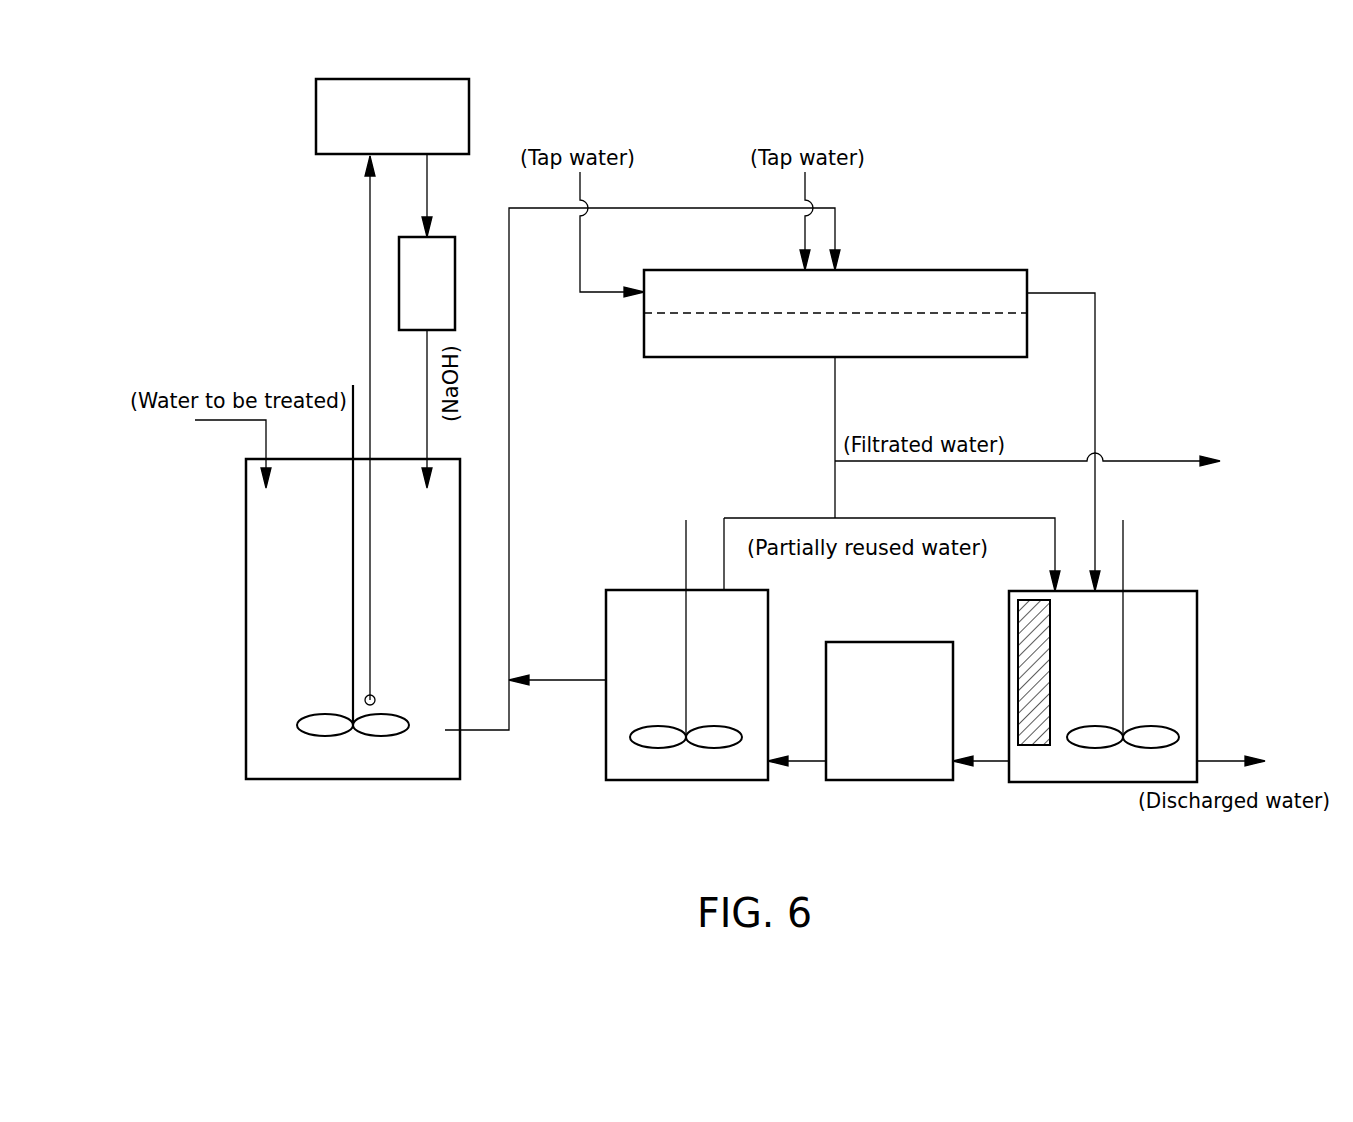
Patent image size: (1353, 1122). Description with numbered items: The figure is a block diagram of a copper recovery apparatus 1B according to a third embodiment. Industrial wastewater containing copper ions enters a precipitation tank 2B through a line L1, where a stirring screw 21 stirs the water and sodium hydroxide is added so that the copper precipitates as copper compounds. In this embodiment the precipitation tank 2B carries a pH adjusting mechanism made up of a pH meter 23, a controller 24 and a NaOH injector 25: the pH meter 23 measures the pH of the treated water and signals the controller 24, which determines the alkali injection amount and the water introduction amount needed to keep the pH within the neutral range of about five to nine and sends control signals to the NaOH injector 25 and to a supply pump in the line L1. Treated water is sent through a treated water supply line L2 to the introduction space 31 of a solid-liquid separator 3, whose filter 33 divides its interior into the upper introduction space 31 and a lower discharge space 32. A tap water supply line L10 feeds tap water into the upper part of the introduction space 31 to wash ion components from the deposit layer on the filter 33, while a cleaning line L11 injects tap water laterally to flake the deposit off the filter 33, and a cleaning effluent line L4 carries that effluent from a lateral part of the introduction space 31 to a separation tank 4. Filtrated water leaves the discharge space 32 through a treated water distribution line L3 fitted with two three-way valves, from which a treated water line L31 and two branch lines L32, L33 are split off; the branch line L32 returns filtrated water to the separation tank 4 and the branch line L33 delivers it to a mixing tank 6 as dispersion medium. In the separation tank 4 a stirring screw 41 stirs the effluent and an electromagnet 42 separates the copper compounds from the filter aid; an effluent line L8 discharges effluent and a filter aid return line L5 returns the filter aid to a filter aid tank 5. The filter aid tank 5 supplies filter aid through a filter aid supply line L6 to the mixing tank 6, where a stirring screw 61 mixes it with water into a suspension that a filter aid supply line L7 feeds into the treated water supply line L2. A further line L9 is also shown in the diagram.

The copper recovery apparatus 1B is at (960, 152).
The precipitation tank 2B is at (350, 781).
The stirring screw 21 is at (297, 725).
The pH meter 23 is at (376, 697).
The controller 24 is at (316, 118).
The NaOH injector 25 is at (434, 237).
The solid-liquid separator 3 is at (890, 270).
The introduction space 31 is at (947, 284).
The discharge space 32 is at (1002, 340).
The filter 33 is at (1000, 310).
The separation tank 4 is at (1121, 783).
The stirring screw 41 is at (1157, 727).
The electromagnet 42 is at (1037, 746).
The filter aid tank 5 is at (887, 781).
The mixing tank 6 is at (683, 781).
The stirring screw 61 is at (646, 740).
The line L1 is at (266, 437).
The treated water supply line L2 is at (509, 363).
The treated water distribution line L3 is at (835, 400).
The treated water line L31 is at (1069, 444).
The branch line L32 is at (965, 517).
The branch line L33 is at (724, 532).
The cleaning effluent line L4 is at (1095, 370).
The filter aid return line L5 is at (990, 766).
The filter aid supply line L6 is at (800, 766).
The filter aid supply line L7 is at (568, 680).
The effluent line L8 is at (1229, 760).
The alkali supply line L9 is at (427, 437).
The tap water supply line L10 is at (805, 239).
The cleaning line L11 is at (580, 240).